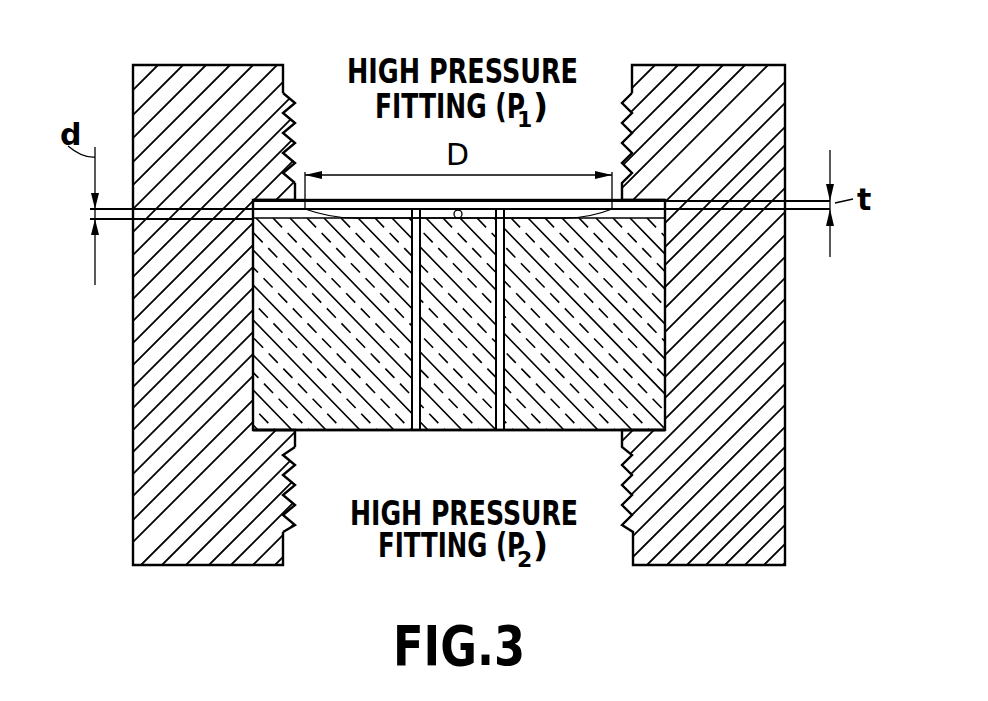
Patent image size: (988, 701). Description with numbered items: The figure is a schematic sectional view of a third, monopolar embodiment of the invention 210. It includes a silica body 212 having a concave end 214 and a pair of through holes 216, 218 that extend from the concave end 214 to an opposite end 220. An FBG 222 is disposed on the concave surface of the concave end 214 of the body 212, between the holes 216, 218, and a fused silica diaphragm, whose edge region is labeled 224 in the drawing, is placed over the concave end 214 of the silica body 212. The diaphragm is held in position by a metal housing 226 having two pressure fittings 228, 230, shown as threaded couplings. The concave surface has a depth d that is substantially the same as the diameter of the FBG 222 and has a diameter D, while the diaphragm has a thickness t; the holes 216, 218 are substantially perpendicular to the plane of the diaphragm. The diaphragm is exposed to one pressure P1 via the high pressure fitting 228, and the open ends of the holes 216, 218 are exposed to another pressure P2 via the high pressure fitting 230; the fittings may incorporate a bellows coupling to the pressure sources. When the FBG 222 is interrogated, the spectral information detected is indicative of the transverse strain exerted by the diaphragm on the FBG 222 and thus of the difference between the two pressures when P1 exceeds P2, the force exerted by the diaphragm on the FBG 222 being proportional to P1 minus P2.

The third, monopolar embodiment of the invention 210 is at (186, 601).
The silica body 212 is at (655, 356).
The concave end 214 is at (585, 213).
The through hole 216 is at (427, 387).
The through hole 218 is at (503, 389).
The opposite end 220 is at (330, 432).
The FBG 222 is at (452, 221).
The diaphragm peripheral edge 224 is at (667, 195).
The metal housing 226 is at (692, 557).
The high pressure fitting 228 is at (287, 93).
The high pressure fitting 230 is at (293, 527).